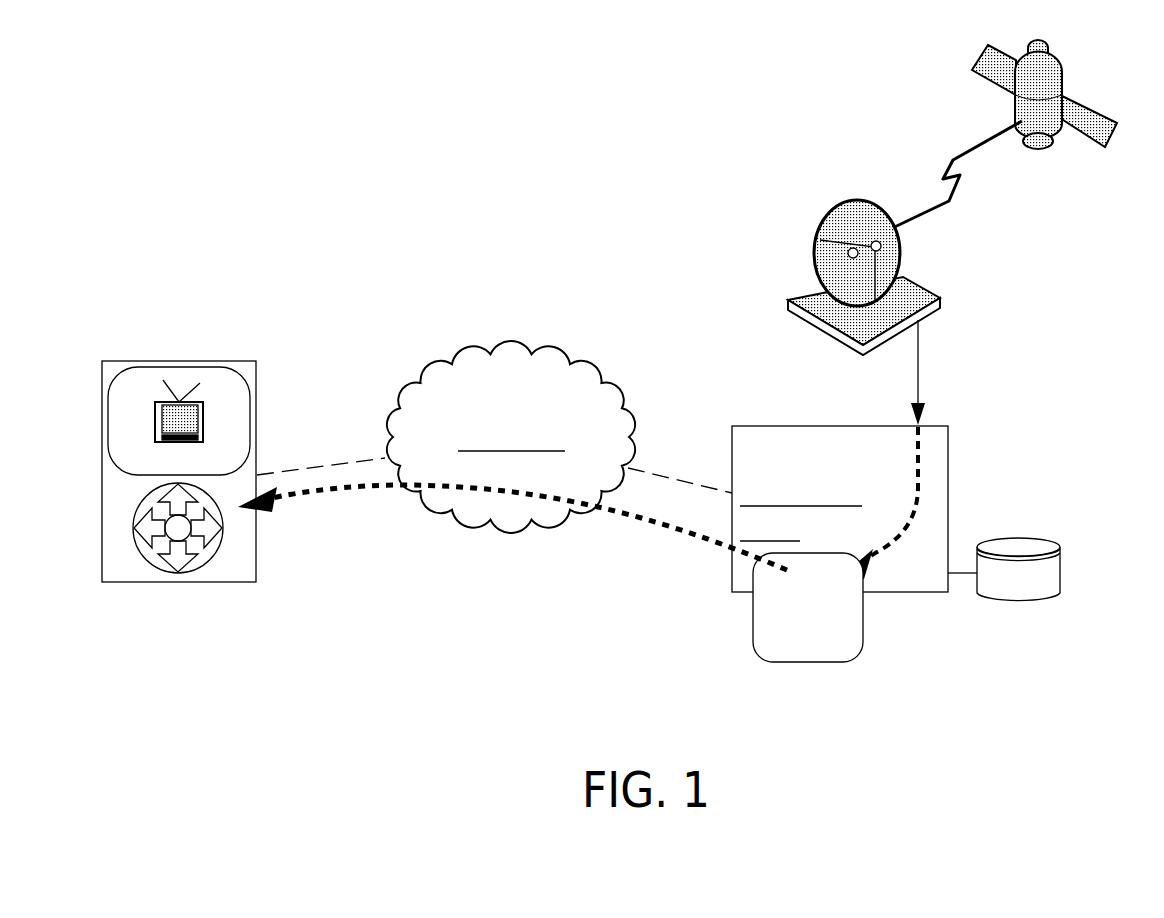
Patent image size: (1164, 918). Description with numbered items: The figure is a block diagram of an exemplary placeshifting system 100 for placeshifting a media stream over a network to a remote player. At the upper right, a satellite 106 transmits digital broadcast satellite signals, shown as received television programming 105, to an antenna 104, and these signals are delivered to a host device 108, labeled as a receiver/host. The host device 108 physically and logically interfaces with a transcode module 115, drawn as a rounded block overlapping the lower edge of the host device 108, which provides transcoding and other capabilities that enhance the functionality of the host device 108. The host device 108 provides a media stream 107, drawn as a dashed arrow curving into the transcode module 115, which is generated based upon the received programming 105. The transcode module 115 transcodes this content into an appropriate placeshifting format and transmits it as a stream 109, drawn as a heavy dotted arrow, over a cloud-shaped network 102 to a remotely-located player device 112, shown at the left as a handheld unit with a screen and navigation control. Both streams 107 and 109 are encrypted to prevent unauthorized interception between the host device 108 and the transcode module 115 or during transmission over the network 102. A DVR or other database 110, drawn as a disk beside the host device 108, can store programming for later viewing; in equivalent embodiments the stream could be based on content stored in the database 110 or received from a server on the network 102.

The placeshifting system 100 is at (396, 176).
The network 102 is at (492, 403).
The antenna 104 is at (828, 316).
The television programming 105 is at (918, 378).
The satellite 106 is at (1058, 80).
The media stream 107 is at (918, 487).
The host device 108 is at (927, 590).
The stream 109 is at (637, 518).
The database 110 is at (1048, 580).
The player device 112 is at (247, 537).
The transcode module 115 is at (845, 632).